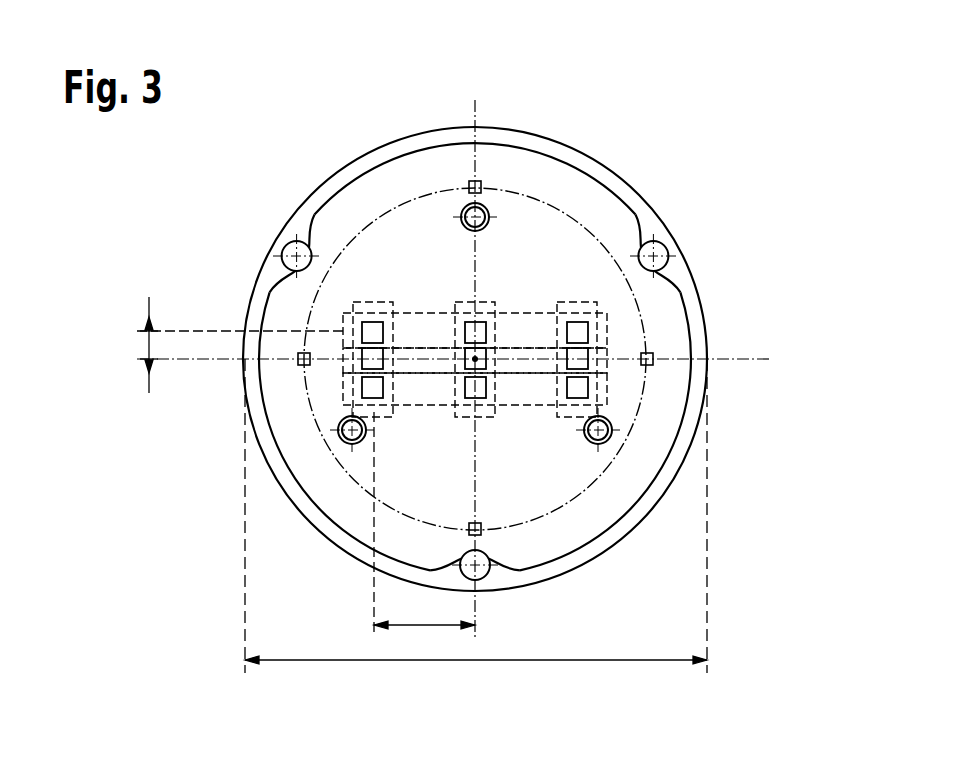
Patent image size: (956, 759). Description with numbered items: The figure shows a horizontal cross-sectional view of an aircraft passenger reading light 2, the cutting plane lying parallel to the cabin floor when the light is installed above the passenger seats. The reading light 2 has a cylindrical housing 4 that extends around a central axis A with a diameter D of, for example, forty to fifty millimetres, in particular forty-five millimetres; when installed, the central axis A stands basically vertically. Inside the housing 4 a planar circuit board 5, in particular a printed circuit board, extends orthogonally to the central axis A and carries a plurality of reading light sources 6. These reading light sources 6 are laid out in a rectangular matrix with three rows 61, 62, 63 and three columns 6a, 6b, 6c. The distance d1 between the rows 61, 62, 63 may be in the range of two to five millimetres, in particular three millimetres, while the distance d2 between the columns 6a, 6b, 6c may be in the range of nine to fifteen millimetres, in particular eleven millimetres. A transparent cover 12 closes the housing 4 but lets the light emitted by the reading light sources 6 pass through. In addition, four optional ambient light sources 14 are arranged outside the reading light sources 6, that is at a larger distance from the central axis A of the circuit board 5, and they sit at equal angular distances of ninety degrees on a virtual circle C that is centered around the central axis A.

The aircraft passenger reading light 2 is at (287, 166).
The cylindrical housing 4 is at (696, 214).
The circuit board 5 is at (634, 229).
The reading light sources 6 is at (472, 358).
The first column of reading light sources 6a is at (375, 287).
The second column of reading light sources 6b is at (464, 287).
The third column of reading light sources 6c is at (574, 286).
The transparent cover 12 is at (565, 176).
The ambient light sources 14 is at (482, 185).
The first row of reading light sources 61 is at (612, 324).
The second row of reading light sources 62 is at (617, 346).
The third row of reading light sources 63 is at (614, 385).
The central axis A is at (481, 364).
The virtual circle C is at (560, 503).
The diameter D is at (476, 516).
The distance between the rows d1 is at (223, 345).
The distance between the columns d2 is at (424, 524).